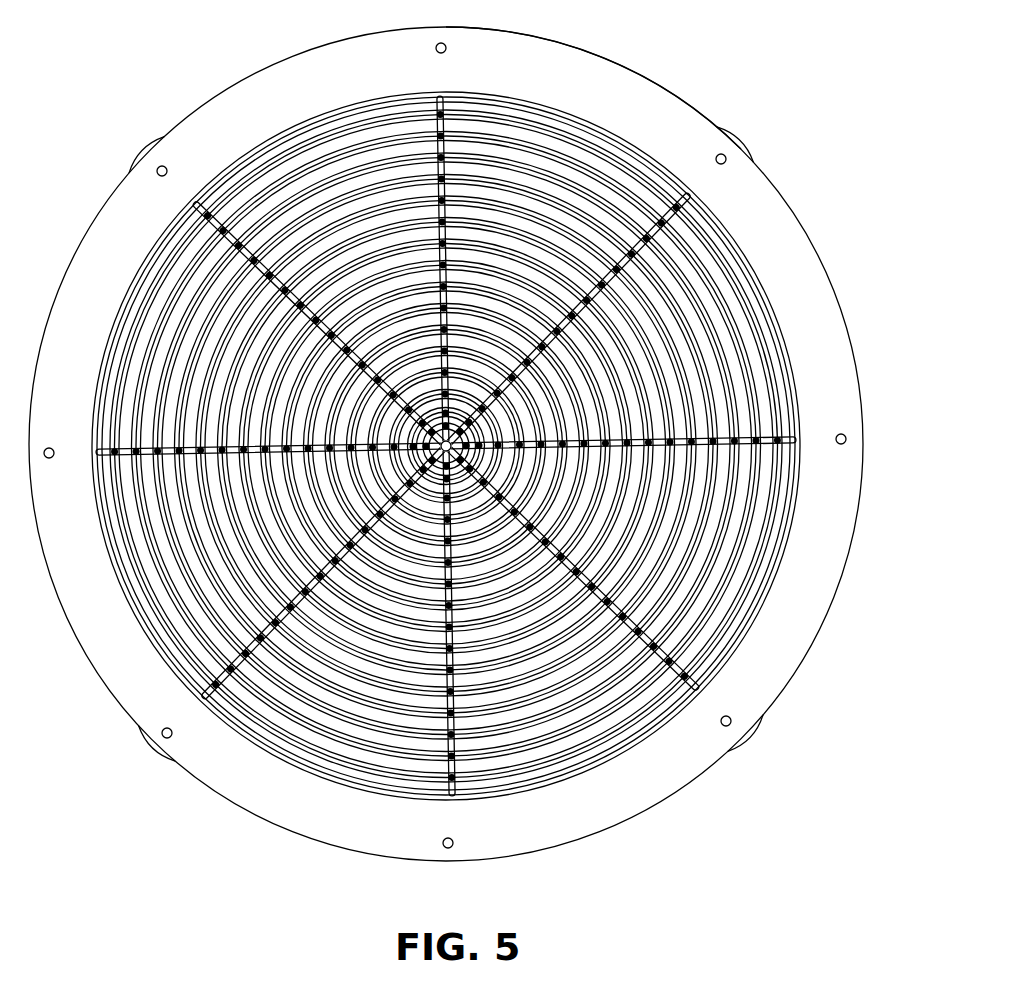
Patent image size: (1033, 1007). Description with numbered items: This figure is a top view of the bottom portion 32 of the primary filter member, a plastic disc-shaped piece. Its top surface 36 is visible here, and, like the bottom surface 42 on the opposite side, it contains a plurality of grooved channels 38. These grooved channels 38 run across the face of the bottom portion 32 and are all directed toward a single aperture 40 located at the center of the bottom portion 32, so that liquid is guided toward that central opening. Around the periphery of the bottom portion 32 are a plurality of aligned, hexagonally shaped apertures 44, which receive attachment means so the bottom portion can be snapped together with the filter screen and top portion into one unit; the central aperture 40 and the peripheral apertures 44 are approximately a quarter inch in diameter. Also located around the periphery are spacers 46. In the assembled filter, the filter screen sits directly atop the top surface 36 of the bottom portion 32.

The bottom portion 32 is at (160, 80).
The top surface 36 is at (418, 846).
The grooved channels 38 is at (710, 340).
The single aperture 40 is at (443, 449).
The bottom surface 42 is at (653, 117).
The peripherally located apertures 44 is at (735, 719).
The peripherally located spacers 46 is at (150, 753).